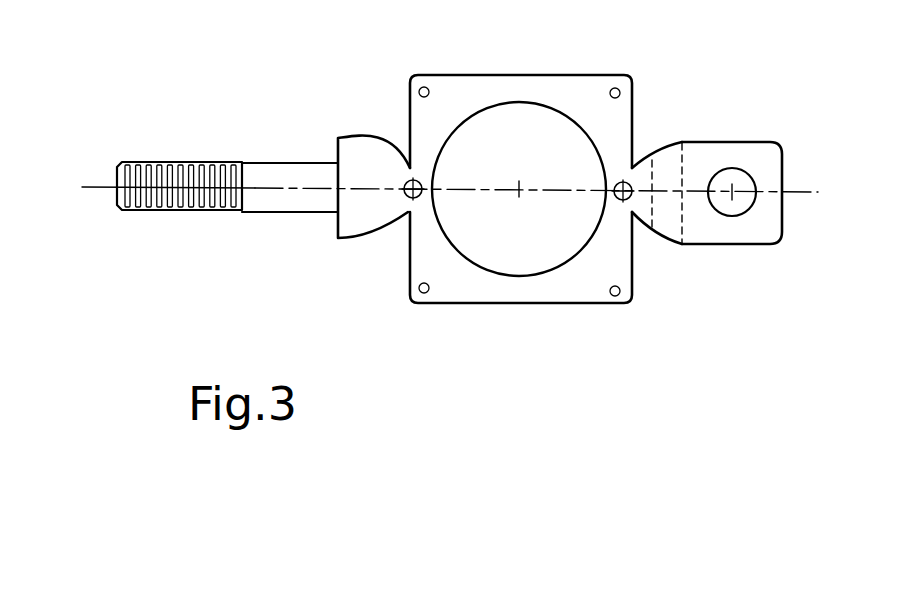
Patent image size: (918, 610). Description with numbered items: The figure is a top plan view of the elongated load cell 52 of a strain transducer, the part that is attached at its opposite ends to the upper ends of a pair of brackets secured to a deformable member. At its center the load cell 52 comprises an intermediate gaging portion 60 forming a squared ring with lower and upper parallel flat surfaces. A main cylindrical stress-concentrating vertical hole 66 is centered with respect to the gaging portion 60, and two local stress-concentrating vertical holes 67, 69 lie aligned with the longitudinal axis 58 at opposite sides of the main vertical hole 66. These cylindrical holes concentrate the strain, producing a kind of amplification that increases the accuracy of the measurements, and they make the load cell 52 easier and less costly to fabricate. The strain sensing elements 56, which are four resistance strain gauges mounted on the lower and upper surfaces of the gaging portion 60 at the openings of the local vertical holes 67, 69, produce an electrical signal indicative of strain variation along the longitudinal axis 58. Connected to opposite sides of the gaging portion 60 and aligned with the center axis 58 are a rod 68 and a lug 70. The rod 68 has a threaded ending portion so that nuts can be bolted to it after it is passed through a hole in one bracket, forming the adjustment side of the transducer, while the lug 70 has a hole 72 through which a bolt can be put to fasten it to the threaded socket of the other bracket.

The load cell 52 is at (646, 67).
The strain sensing elements 56 is at (390, 133).
The longitudinal axis 58 is at (93, 187).
The intermediate gaging portion 60 is at (562, 286).
The main cylindrical stress-concentrating vertical hole 66 is at (518, 231).
The local stress-concentrating vertical hole 67 is at (402, 229).
The rod 68 is at (287, 173).
The local stress-concentrating vertical hole 69 is at (633, 214).
The lug 70 is at (728, 152).
The hole 72 is at (742, 205).